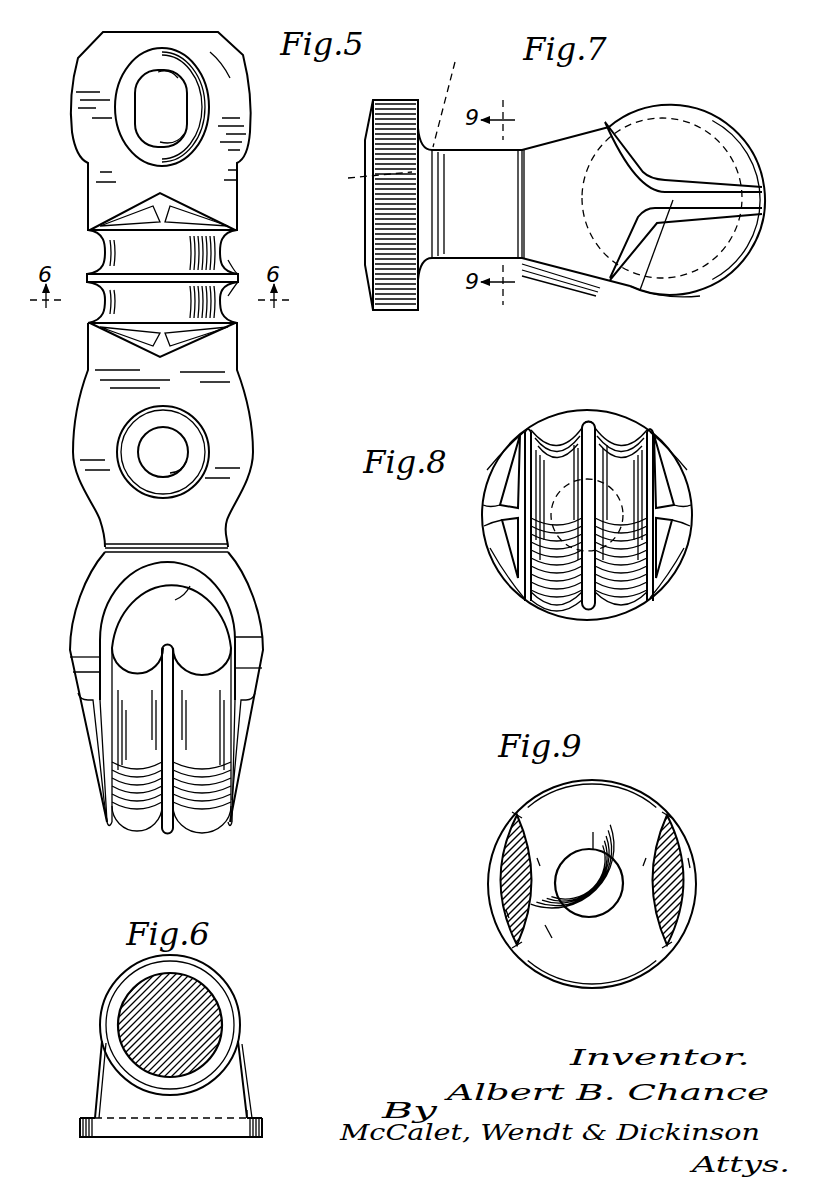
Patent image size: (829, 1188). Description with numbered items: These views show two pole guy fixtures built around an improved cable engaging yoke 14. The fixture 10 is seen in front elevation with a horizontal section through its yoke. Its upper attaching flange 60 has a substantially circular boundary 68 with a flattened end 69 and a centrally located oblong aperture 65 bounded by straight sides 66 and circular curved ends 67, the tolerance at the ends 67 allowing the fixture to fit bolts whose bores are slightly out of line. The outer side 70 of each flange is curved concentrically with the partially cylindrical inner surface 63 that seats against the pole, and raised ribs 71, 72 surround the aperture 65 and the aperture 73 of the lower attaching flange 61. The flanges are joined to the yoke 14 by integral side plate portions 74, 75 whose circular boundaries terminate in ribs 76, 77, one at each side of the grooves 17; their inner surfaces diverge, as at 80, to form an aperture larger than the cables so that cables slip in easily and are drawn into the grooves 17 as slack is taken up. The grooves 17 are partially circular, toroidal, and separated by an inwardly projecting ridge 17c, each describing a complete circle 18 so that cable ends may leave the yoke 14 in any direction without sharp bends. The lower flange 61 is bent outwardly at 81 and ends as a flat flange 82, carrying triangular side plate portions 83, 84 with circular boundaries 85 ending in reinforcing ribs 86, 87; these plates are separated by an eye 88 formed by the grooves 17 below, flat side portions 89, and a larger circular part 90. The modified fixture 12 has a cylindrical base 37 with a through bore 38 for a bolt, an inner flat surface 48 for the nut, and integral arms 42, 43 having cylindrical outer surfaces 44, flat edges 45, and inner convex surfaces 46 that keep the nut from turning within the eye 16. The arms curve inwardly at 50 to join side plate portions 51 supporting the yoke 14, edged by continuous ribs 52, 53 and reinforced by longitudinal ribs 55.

In FIG. 5, the fixture 10 is at (87, 361).
In FIG. 6, the fixture 10 is at (246, 1070).
In FIG. 7, the fixture 12 is at (428, 95).
In FIG. 8, the fixture 12 is at (676, 579).
In FIG. 9, the fixture 12 is at (641, 791).
In FIG. 5, the cable engaging yoke 14 is at (238, 228).
In FIG. 6, the cable engaging yoke 14 is at (233, 986).
In FIG. 8, the cable engaging yoke 14 is at (545, 600).
In FIG. 9, the eye 16 is at (548, 933).
In FIG. 5, the grooves 17 is at (106, 250).
In FIG. 6, the grooves 17 is at (225, 1022).
In FIG. 7, the grooves 17 is at (695, 285).
In FIG. 8, the grooves 17 is at (553, 445).
In FIG. 5, the ridge 17c is at (240, 275).
In FIG. 6, the ridge 17c is at (205, 967).
In FIG. 7, the ridge 17c is at (592, 268).
In FIG. 8, the ridge 17c is at (590, 430).
In FIG. 7, the circle 18 is at (682, 122).
In FIG. 7, the base 37 is at (368, 262).
In FIG. 8, the base 37 is at (610, 420).
In FIG. 9, the base 37 is at (606, 965).
In FIG. 7, the through bore 38 is at (364, 172).
In FIG. 8, the through bore 38 is at (616, 600).
In FIG. 9, the through bore 38 is at (589, 885).
In FIG. 7, the arm 42 is at (456, 205).
In FIG. 8, the arm 42 is at (498, 495).
In FIG. 9, the arm 42 is at (504, 845).
In FIG. 8, the arm 43 is at (662, 510).
In FIG. 9, the arm 43 is at (689, 930).
In FIG. 7, the cylindrical outer surface 44 is at (500, 152).
In FIG. 8, the cylindrical outer surface 44 is at (495, 560).
In FIG. 9, the cylindrical outer surface 44 is at (686, 862).
In FIG. 9, the flat edges 45 is at (517, 815).
In FIG. 9, the inner convex surface 46 is at (536, 862).
In FIG. 7, the flat surface 48 is at (454, 92).
In FIG. 9, the flat surface 48 is at (593, 832).
In FIG. 7, the inward curve 50 is at (548, 145).
In FIG. 8, the inward curve 50 is at (516, 555).
In FIG. 7, the side plate portions 51 is at (722, 250).
In FIG. 8, the side plate portions 51 is at (518, 515).
In FIG. 7, the rib 52 is at (742, 135).
In FIG. 8, the rib 52 is at (526, 432).
In FIG. 8, the rib 53 is at (652, 450).
In FIG. 7, the rib 55 is at (660, 270).
In FIG. 8, the rib 55 is at (515, 516).
In FIG. 5, the attaching flange 60 is at (236, 117).
In FIG. 6, the attaching flange 60 is at (264, 1126).
In FIG. 5, the attaching flange 61 is at (235, 458).
In FIG. 6, the inner surface 63 is at (205, 1134).
In FIG. 5, the oblong aperture 65 is at (173, 90).
In FIG. 5, the straight sides 66 is at (161, 108).
In FIG. 5, the curved ends 67 is at (174, 74).
In FIG. 5, the circular boundary 68 is at (209, 58).
In FIG. 5, the flattened end 69 is at (163, 32).
In FIG. 5, the outer side 70 is at (237, 152).
In FIG. 6, the outer side 70 is at (248, 1116).
In FIG. 5, the rib 71 is at (125, 122).
In FIG. 5, the rib 72 is at (192, 437).
In FIG. 5, the aperture 73 is at (173, 468).
In FIG. 5, the side plate portion 74 is at (173, 192).
In FIG. 6, the side plate portion 74 is at (110, 1113).
In FIG. 5, the side plate portion 75 is at (155, 333).
In FIG. 5, the rib 76 is at (93, 232).
In FIG. 5, the rib 77 is at (103, 324).
In FIG. 6, the diverging inner surface 80 is at (168, 1120).
In FIG. 5, the outward bend 81 is at (230, 547).
In FIG. 5, the flat flange 82 is at (125, 560).
In FIG. 5, the side plate portion 83 is at (98, 660).
In FIG. 5, the side plate portion 84 is at (240, 628).
In FIG. 5, the circular boundary 85 is at (92, 738).
In FIG. 5, the reinforcing rib 86 is at (105, 808).
In FIG. 5, the reinforcing rib 87 is at (232, 778).
In FIG. 5, the eye 88 is at (197, 577).
In FIG. 5, the flat side portions 89 is at (236, 640).
In FIG. 5, the circular part 90 is at (164, 599).